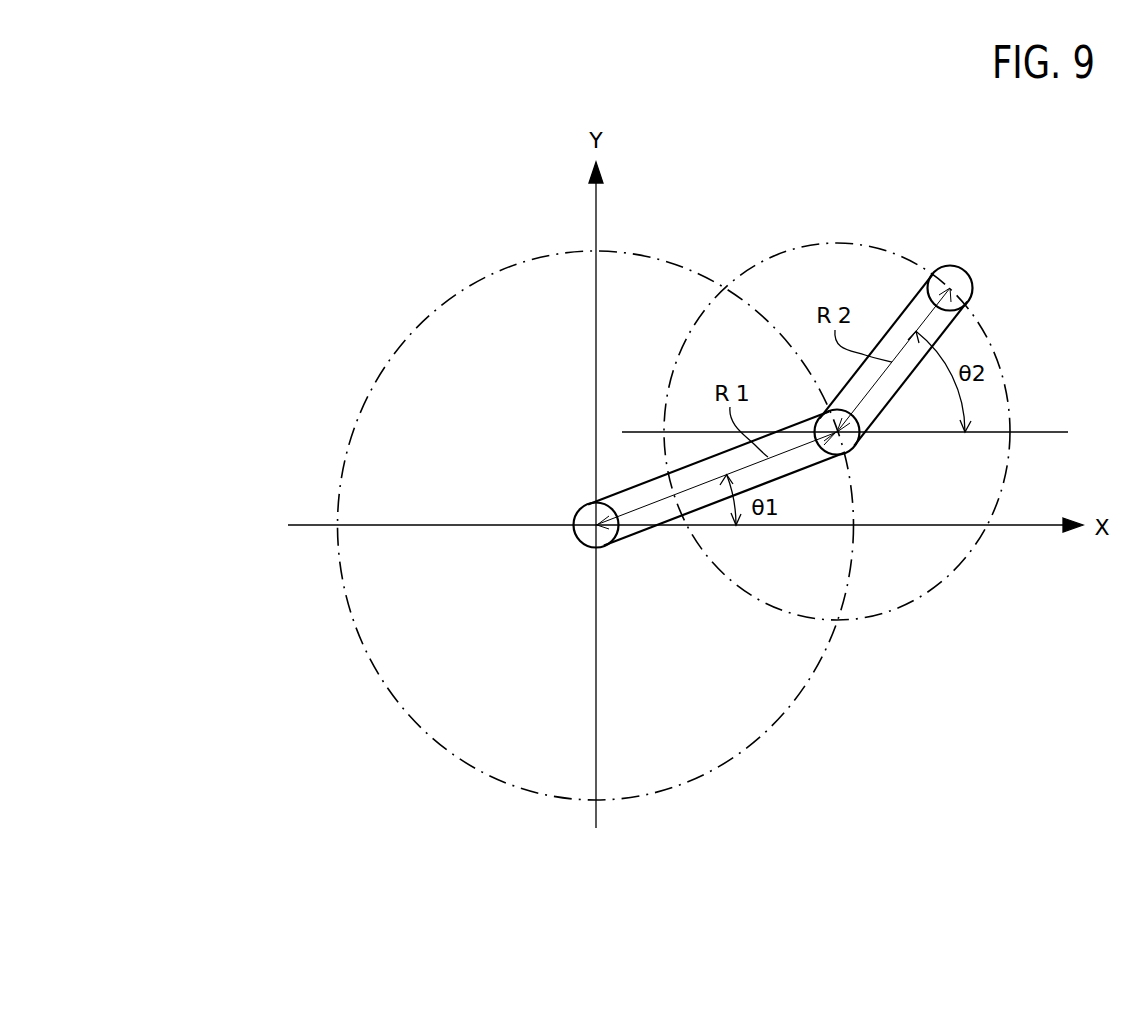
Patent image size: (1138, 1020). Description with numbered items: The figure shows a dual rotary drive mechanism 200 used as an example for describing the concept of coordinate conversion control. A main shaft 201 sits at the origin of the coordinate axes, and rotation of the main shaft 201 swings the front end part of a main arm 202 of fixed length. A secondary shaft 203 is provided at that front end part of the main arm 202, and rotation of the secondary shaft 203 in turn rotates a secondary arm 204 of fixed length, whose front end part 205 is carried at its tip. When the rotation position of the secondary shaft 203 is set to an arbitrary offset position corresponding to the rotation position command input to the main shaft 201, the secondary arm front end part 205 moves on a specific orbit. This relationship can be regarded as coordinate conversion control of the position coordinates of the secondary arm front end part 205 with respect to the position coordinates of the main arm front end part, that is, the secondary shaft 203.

The dual rotary drive mechanism 200 is at (332, 236).
The main shaft 201 is at (590, 505).
The main arm 202 is at (664, 512).
The secondary shaft 203 is at (850, 447).
The secondary arm 204 is at (910, 303).
The secondary arm front end part 205 is at (967, 273).